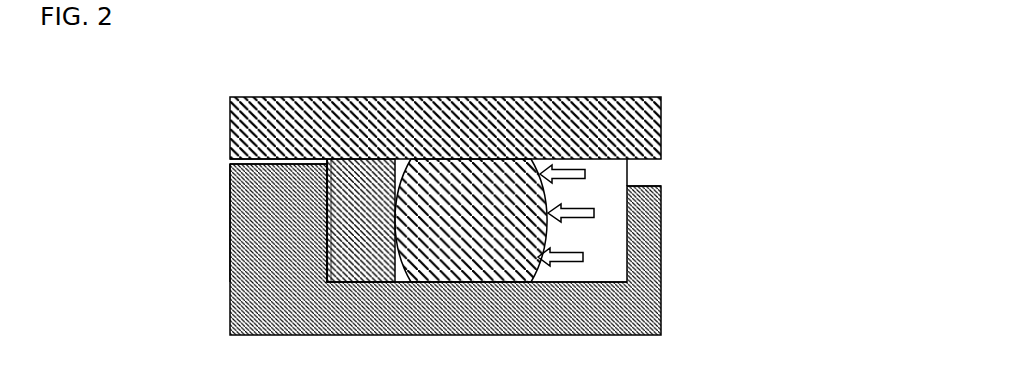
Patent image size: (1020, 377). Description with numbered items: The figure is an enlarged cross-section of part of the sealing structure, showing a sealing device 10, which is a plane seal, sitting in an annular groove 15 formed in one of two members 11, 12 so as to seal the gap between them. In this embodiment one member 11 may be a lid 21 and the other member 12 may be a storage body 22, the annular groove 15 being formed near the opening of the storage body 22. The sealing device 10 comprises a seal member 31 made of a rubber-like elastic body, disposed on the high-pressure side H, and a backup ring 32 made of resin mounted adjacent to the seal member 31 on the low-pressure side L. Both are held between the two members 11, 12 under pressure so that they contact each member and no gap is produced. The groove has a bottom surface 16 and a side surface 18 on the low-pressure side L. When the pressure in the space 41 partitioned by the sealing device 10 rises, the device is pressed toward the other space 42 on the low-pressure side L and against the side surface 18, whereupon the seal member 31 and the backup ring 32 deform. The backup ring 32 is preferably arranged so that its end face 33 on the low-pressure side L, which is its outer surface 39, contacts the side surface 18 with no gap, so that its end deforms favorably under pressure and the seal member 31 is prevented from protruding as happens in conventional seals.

The member 11 is at (652, 126).
The lid 21 is at (502, 127).
The member 12 is at (652, 292).
The storage body 22 is at (507, 249).
The annular groove 15 is at (627, 186).
The bottom surface 16 is at (563, 283).
The side surface 18 is at (329, 226).
The seal member 31 is at (462, 180).
The backup ring 32 is at (363, 200).
The sealing device 10 is at (447, 159).
The end face 33 is at (327, 190).
The outer surface 39 is at (304, 164).
The low-pressure side L is at (263, 161).
The space 42 is at (220, 155).
The high-pressure side H is at (628, 173).
The space 41 is at (701, 173).